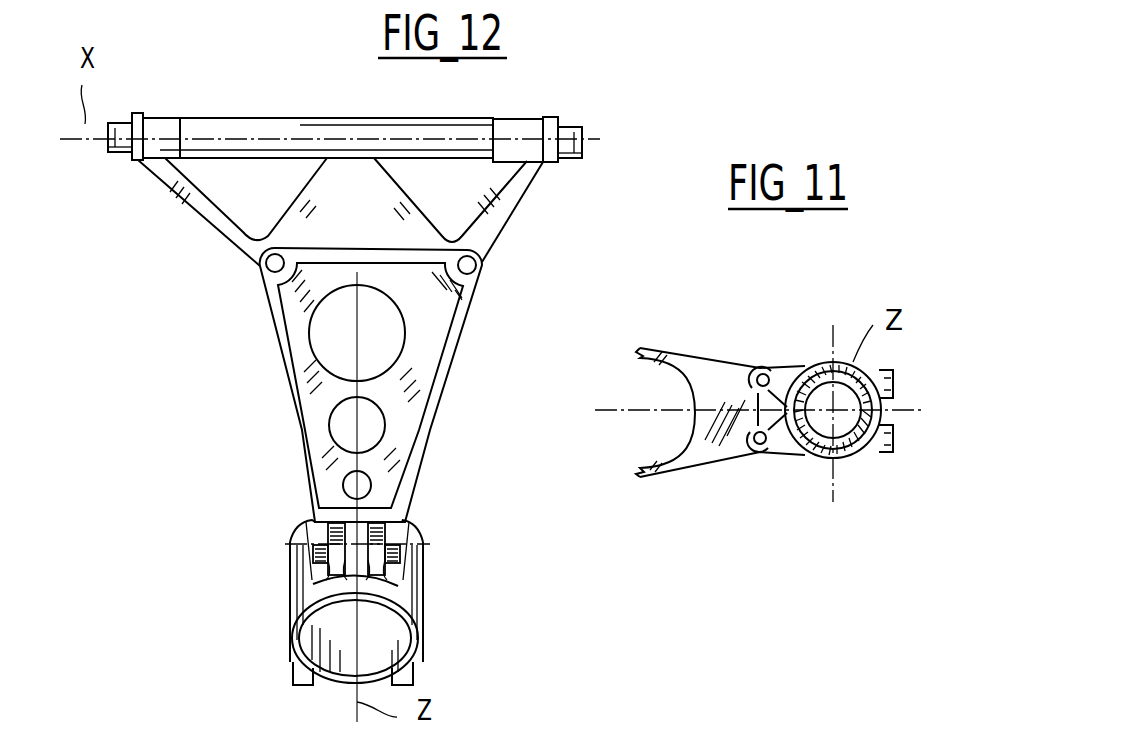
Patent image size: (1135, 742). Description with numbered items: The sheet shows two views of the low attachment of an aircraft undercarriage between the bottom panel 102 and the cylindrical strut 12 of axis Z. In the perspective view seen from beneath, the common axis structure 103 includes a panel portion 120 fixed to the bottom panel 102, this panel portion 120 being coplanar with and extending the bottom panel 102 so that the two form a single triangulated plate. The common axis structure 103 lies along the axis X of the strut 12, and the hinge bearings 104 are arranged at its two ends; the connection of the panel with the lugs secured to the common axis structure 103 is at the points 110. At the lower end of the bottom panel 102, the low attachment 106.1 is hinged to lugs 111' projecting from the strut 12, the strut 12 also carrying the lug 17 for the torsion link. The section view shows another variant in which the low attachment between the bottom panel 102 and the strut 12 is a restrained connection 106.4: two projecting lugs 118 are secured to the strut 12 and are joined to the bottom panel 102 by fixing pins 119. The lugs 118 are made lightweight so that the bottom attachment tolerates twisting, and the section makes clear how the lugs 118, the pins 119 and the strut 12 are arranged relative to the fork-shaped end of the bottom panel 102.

In FIG. 12, the cylindrical strut 12 is at (290, 575).
In FIG. 11, the cylindrical strut 12 is at (847, 463).
In FIG. 12, the lug 17 is at (412, 673).
In FIG. 12, the bottom panel 102 is at (312, 387).
In FIG. 11, the bottom panel 102 is at (693, 448).
In FIG. 12, the common axis structure 103 is at (288, 110).
In FIG. 12, the hinge bearing 104 is at (122, 147).
In FIG. 12, the low attachment 106.1 is at (275, 542).
In FIG. 11, the restrained connection 106.4 is at (776, 340).
In FIG. 12, the connection 110 is at (268, 266).
In FIG. 12, the threaded fixing bores 111' is at (405, 551).
In FIG. 11, the projecting lug 118 is at (790, 363).
In FIG. 11, the fixing pin 119 is at (756, 370).
In FIG. 12, the panel portion 120 is at (217, 225).